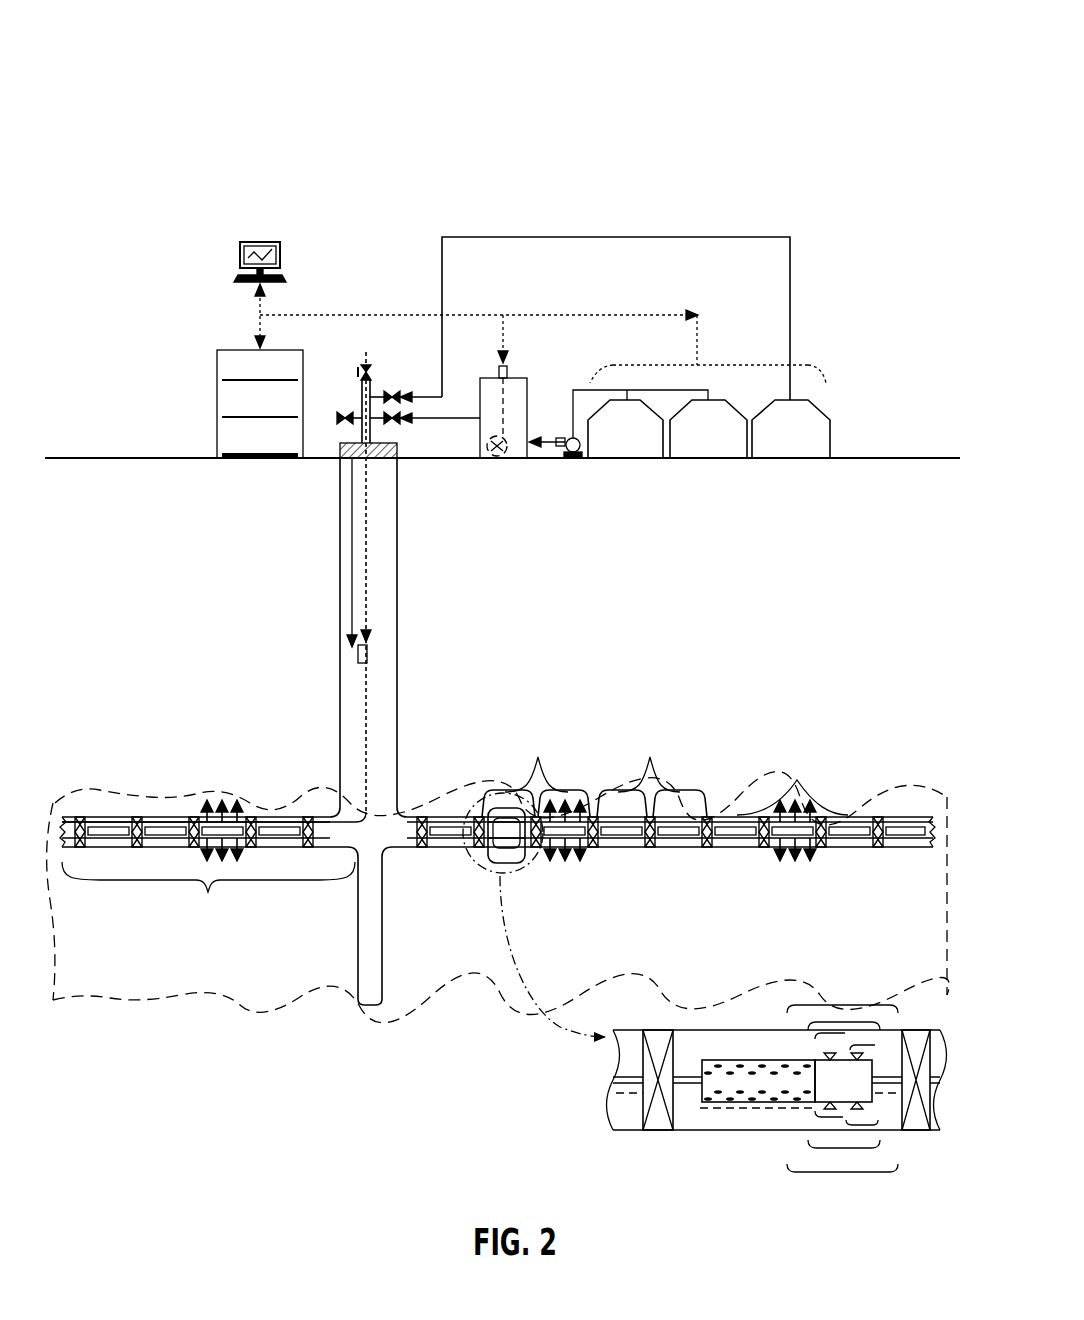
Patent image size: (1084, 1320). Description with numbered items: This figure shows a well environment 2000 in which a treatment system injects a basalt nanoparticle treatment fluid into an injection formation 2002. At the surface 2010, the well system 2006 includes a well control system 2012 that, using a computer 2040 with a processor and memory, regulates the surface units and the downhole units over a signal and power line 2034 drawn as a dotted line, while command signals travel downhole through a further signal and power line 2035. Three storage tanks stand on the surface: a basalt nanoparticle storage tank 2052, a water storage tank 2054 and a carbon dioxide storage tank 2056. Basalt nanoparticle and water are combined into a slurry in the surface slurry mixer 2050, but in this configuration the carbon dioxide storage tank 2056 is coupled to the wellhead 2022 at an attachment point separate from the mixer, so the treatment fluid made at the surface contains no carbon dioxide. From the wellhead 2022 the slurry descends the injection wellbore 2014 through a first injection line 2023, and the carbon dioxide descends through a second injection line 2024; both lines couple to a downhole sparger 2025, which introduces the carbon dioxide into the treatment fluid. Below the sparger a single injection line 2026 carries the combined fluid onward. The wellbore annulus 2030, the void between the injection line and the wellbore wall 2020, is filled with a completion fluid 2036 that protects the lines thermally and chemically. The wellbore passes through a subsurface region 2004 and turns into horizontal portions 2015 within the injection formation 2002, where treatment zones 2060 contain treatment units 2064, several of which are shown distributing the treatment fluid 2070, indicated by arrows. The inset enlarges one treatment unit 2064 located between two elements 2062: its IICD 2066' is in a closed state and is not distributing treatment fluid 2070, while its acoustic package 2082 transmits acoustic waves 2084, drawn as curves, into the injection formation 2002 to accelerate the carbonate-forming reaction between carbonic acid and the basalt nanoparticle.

The well environment 2000 is at (140, 45).
The well system 2006 is at (228, 136).
The surface 2010 is at (136, 457).
The well control system 2012 is at (235, 348).
The computer 2040 is at (262, 240).
The wellhead 2022 is at (343, 404).
The surface slurry mixer 2050 is at (518, 370).
The signal and power line 2034 is at (690, 287).
The basalt nanoparticle storage tank 2052 is at (598, 452).
The water storage tank 2054 is at (710, 452).
The CO2 storage tank 2056 is at (805, 452).
The completion fluid 2036 is at (380, 530).
The second injection line 2024 is at (350, 500).
The signal and power line 2035 is at (355, 570).
The single injection line 2026 is at (368, 580).
The first injection line 2023 is at (366, 625).
The downhole sparger 2025 is at (354, 655).
The wellbore wall 2020 is at (398, 608).
The injection wellbore 2014 is at (418, 643).
The wellbore annulus 2030 is at (348, 700).
The subterranean formation 2004 is at (803, 667).
The injection formation 2002 is at (150, 967).
The horizontal portions 2015 is at (497, 874).
The treatment zones 2060 is at (594, 767).
The treatment units 2064 is at (524, 799).
The acoustic waves 2084 is at (486, 857).
The treatment fluid 2070 is at (549, 872).
The packers 2062 is at (657, 1037).
The IICD 2066' is at (758, 1021).
The acoustic package 2082 is at (830, 1062).